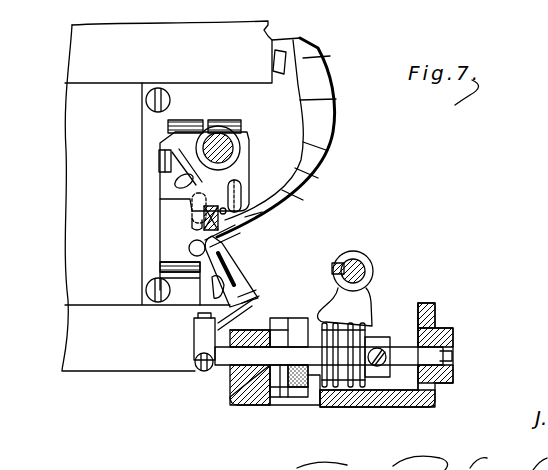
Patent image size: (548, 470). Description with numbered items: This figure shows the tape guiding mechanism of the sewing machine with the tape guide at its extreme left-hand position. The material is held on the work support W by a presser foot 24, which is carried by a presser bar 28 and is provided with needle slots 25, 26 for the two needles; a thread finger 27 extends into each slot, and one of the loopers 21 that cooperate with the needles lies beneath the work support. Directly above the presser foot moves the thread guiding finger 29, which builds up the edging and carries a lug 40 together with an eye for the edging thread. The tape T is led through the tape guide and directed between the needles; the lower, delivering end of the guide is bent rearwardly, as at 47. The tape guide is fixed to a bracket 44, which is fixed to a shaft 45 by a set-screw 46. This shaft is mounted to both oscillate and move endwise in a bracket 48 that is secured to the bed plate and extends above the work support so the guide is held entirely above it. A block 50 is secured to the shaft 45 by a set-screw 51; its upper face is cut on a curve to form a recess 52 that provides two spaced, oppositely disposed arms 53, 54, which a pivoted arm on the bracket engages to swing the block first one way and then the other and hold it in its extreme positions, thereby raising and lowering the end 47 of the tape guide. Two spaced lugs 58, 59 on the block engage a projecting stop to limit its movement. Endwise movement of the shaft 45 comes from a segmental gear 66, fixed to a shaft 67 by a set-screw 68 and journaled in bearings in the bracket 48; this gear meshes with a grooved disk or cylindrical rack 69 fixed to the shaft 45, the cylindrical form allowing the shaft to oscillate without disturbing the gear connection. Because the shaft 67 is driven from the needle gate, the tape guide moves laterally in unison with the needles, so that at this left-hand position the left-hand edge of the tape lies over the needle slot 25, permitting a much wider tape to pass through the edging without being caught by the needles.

The tape T is at (222, 222).
The work support W is at (242, 104).
The lug 40 is at (317, 163).
The presser foot 24 is at (177, 214).
The needle slot 25 is at (195, 222).
The needle slot 26 is at (240, 194).
The thread finger 27 is at (245, 156).
The presser bar 28 is at (217, 138).
The thread guiding finger 29 is at (262, 212).
The looper 21 is at (205, 238).
The rearwardly bent lower end of tape guide 47 is at (227, 257).
The shaft 45 is at (248, 358).
The bracket 44 is at (203, 333).
The set-screw 46 is at (198, 368).
The recess 52 is at (262, 397).
The lug 58 is at (282, 336).
The arm of block 54 is at (272, 318).
The arm of block 53 is at (278, 380).
The set-screw 51 is at (293, 385).
The lug 59 is at (285, 398).
The block 50 is at (305, 393).
The grooved disk or cylindrical rack 69 is at (345, 372).
The bracket 48 is at (416, 392).
The segmental gear 66 is at (356, 305).
The shaft 67 is at (364, 269).
The set-screw 68 is at (336, 262).